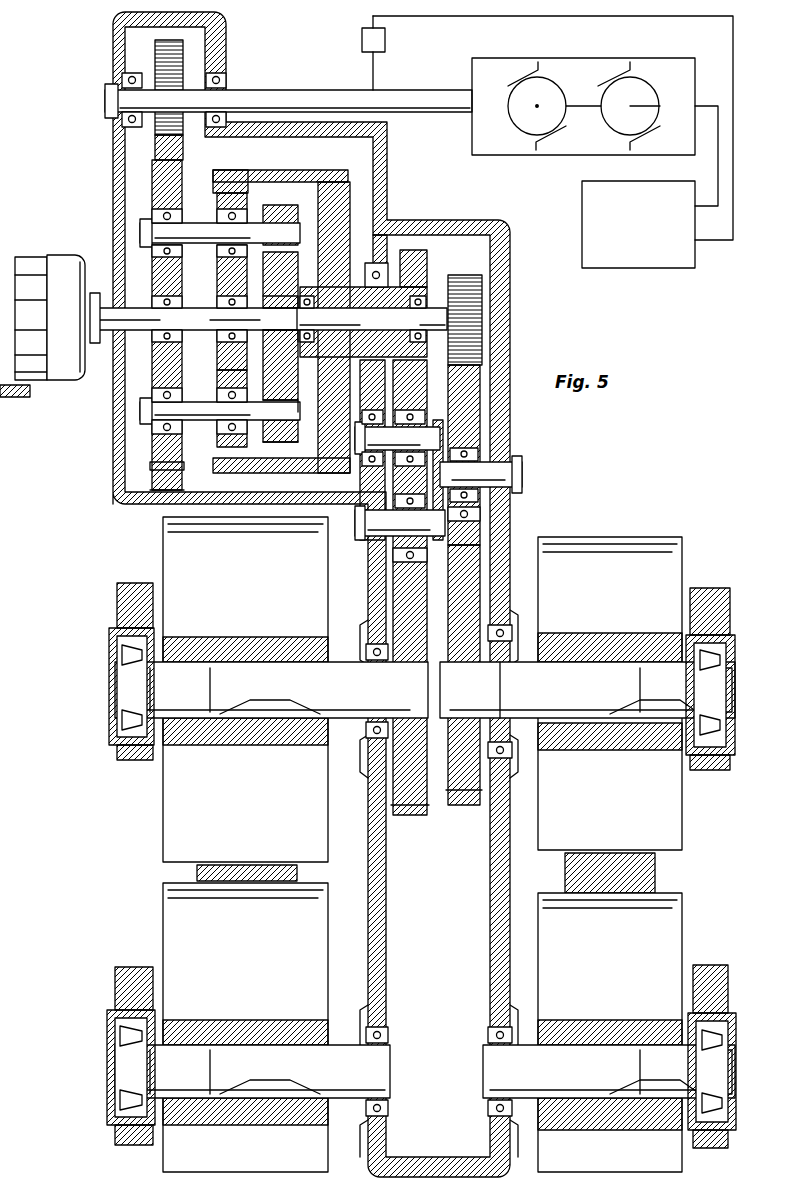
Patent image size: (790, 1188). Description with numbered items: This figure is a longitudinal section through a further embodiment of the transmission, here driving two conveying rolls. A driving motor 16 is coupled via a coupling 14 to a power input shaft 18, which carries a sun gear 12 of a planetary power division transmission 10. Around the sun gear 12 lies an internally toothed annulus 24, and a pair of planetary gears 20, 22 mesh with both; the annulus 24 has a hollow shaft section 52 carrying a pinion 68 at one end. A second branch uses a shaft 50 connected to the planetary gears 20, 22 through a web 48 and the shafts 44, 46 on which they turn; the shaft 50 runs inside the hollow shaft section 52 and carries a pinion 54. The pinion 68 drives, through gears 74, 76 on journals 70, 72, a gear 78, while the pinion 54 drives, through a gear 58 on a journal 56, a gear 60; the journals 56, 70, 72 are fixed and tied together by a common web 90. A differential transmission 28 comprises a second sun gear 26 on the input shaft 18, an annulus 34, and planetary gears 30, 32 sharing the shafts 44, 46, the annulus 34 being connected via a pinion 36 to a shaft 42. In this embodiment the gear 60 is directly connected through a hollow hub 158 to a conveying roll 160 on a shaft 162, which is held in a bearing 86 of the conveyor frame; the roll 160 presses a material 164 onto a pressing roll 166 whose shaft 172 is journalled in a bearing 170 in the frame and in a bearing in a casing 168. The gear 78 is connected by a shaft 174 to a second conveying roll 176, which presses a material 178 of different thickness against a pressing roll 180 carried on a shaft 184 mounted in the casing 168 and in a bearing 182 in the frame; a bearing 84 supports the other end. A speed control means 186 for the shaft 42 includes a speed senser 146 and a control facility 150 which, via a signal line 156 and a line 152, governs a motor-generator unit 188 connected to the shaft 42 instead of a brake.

The power division transmission 10 is at (271, 482).
The sun gear 12 is at (220, 285).
The coupling 14 is at (95, 292).
The driving motor 16 is at (36, 268).
The power input shaft 18 is at (202, 330).
The planetary gear 20 is at (220, 385).
The planetary gear 22 is at (224, 214).
The internally toothed annulus 24 is at (255, 176).
The second sun gear 26 is at (166, 288).
The differential transmission 28 is at (170, 492).
The planetary gear 30 is at (158, 440).
The planetary gear 32 is at (158, 196).
The internally toothed annulus 34 is at (160, 482).
The pinion 36 is at (172, 62).
The shaft 42 is at (283, 90).
The shaft 44 is at (276, 395).
The shaft 46 is at (256, 226).
The web 48 is at (285, 218).
The shaft 50 is at (372, 320).
The hollow shaft section 52 is at (362, 278).
The pinion 54 is at (470, 308).
The journal 56 is at (512, 472).
The gear 58 is at (470, 540).
The gear 60 is at (464, 790).
The pinion 68 is at (416, 278).
The journal 70 is at (397, 438).
The journal 72 is at (360, 526).
The gear 74 is at (432, 470).
The gear 76 is at (395, 556).
The gear 78 is at (400, 594).
The bearing 84 is at (138, 760).
The bearing 86 is at (712, 770).
The common web 90 is at (446, 515).
The speed senser 146 is at (360, 38).
The control facility 150 is at (622, 260).
The signal line 152 is at (733, 98).
The signal line 156 is at (718, 160).
The hollow hub 158 is at (522, 650).
The conveying roll 160 is at (650, 553).
The shaft 162 is at (654, 680).
The material 164 is at (648, 875).
The pressing roll 166 is at (672, 937).
The casing 168 is at (366, 962).
The bearing 170 is at (716, 1138).
The shaft 172 is at (655, 1060).
The shaft 174 is at (349, 705).
The second conveying roll 176 is at (165, 830).
The material 178 is at (195, 870).
The pressing roll 180 is at (165, 928).
The bearing 182 is at (130, 1140).
The shaft 184 is at (349, 1092).
The speed control means 186 is at (720, 262).
The motor-generator unit 188 is at (560, 160).